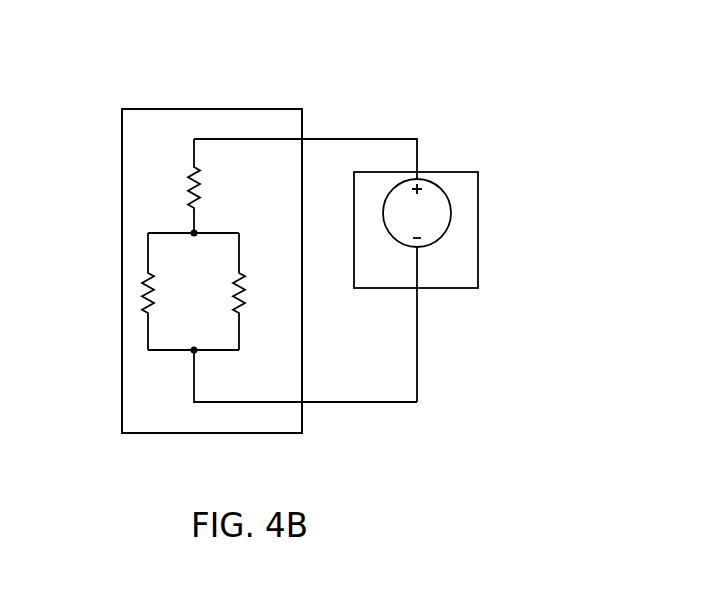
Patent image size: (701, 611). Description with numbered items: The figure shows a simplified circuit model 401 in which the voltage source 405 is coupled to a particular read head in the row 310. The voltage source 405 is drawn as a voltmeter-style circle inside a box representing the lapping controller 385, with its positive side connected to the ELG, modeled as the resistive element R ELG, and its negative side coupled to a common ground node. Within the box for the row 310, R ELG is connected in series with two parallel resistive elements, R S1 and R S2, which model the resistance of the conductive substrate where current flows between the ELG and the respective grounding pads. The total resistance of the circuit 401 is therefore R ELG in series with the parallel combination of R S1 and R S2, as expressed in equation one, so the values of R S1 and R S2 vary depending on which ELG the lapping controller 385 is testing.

The row 310 is at (122, 140).
The simplified circuit model 401 is at (461, 118).
The lapping controller 385 is at (478, 188).
The voltage source 405 is at (441, 237).